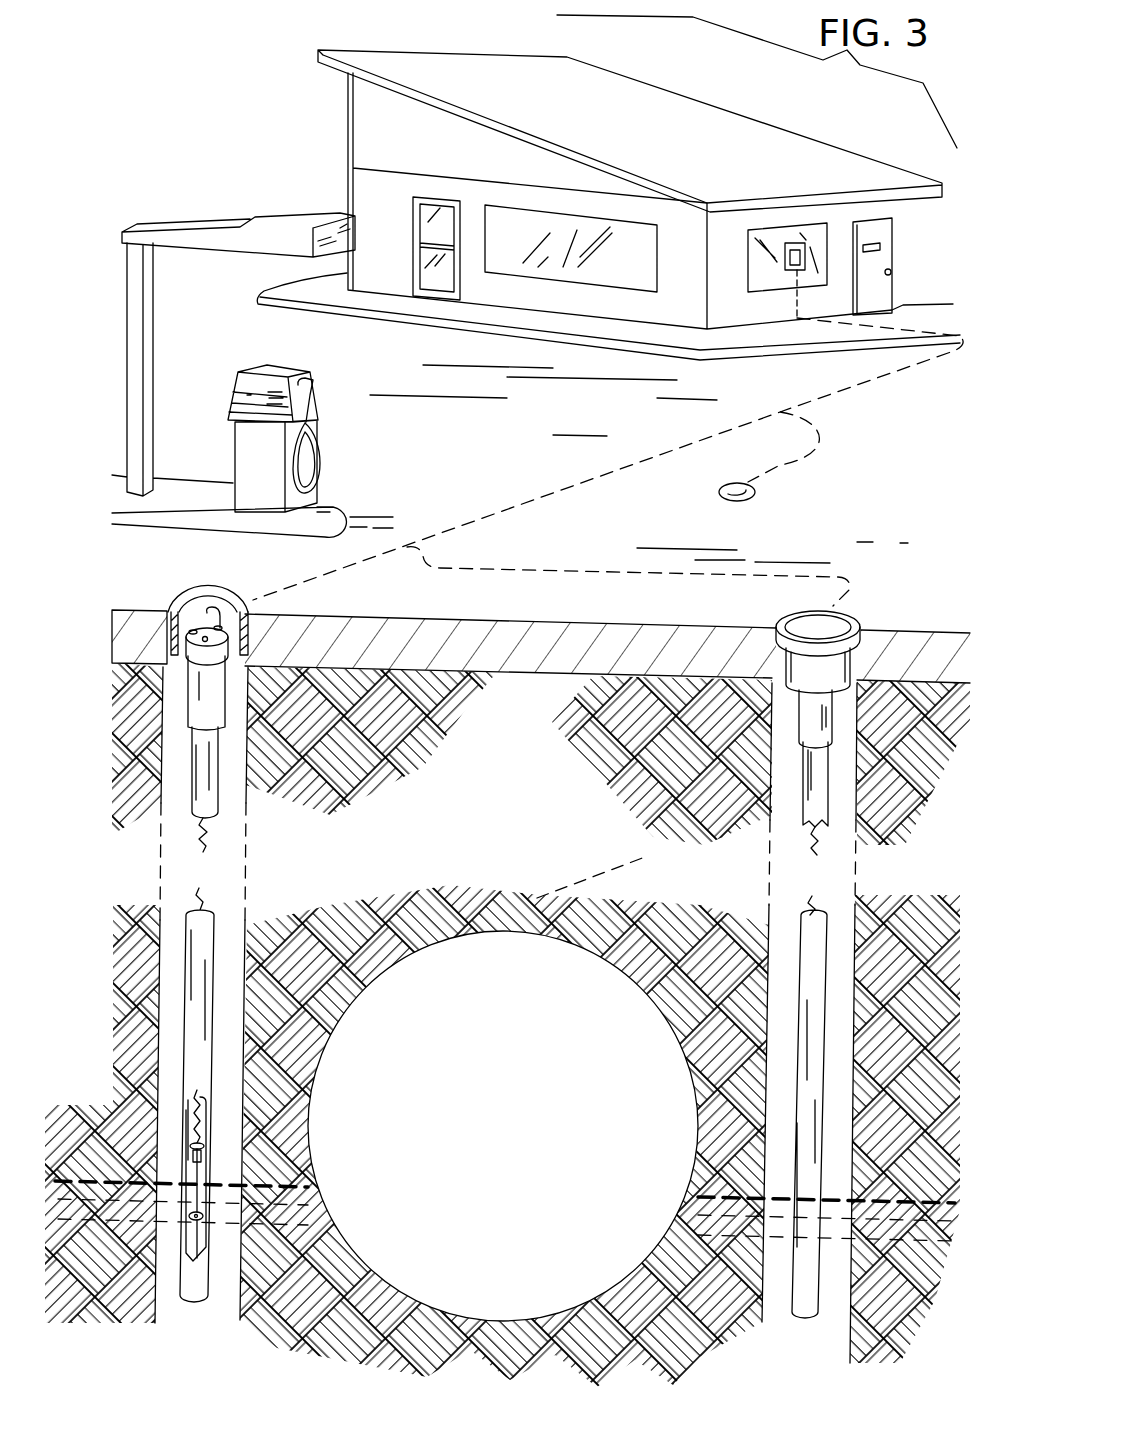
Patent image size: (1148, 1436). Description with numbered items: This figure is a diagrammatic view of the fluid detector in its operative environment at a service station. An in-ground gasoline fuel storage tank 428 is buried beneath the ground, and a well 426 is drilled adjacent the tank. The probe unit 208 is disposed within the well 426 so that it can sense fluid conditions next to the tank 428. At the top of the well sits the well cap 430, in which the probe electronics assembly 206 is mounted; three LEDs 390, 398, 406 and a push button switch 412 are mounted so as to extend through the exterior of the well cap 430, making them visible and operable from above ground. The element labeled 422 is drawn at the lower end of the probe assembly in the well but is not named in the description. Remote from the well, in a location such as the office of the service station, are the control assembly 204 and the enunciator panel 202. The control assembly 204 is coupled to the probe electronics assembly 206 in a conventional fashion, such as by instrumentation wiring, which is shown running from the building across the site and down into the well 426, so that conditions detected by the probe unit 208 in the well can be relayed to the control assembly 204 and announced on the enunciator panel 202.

The enunciator panel 202 is at (816, 255).
The control assembly 204 is at (822, 259).
The probe electronics assembly 206 is at (712, 495).
The probe unit 208 is at (185, 1152).
The LED 390 is at (187, 630).
The LED 398 is at (205, 634).
The LED 406 is at (249, 616).
The push button switch 412 is at (226, 624).
The sensor tube 422 is at (193, 1262).
The well 426 is at (240, 898).
The in-ground gasoline fuel storage tank 428 is at (575, 1136).
The well cap 430 is at (201, 606).